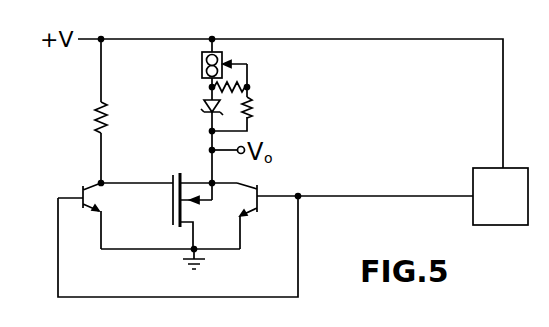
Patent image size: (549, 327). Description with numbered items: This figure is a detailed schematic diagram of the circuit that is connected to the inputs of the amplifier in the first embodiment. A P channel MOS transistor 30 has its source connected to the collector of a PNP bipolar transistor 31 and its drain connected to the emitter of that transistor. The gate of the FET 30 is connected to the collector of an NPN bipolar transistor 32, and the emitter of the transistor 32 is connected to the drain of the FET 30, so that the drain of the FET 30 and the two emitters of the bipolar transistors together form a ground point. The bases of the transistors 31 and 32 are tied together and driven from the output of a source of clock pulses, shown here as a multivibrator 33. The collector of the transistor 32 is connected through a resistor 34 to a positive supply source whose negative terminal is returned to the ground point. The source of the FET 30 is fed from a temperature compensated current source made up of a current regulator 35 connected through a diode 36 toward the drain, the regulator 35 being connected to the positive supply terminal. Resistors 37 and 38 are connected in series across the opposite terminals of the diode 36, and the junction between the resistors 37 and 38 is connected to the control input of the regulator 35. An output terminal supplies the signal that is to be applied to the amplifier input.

The P channel MOS transistor 30 is at (173, 214).
The PNP bipolar transistor 31 is at (259, 192).
The NPN bipolar transistor 32 is at (82, 191).
The multivibrator 33 is at (478, 168).
The resistor 34 is at (97, 108).
The current regulator 35 is at (202, 68).
The diode 36 is at (203, 108).
The resistor 37 is at (249, 83).
The resistor 38 is at (252, 107).